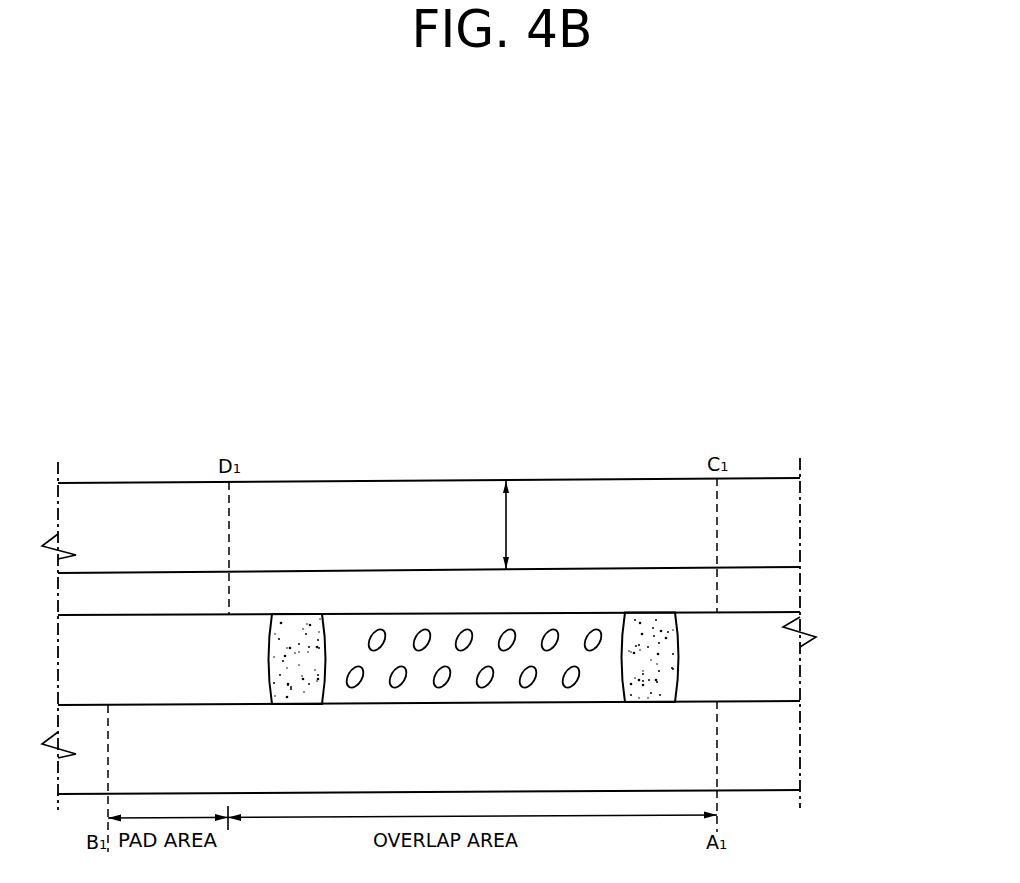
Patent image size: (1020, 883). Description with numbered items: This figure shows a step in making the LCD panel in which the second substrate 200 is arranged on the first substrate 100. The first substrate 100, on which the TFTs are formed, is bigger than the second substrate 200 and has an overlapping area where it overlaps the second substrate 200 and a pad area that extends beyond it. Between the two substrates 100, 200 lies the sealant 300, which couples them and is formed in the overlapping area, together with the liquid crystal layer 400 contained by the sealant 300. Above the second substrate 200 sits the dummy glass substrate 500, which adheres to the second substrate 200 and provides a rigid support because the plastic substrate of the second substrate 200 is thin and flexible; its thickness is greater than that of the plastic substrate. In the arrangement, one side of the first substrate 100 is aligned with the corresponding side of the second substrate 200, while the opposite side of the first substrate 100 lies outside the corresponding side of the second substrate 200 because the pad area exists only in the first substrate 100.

The first substrate 100 is at (800, 745).
The second substrate 200 is at (800, 585).
The sealant 300 is at (663, 637).
The liquid crystal layer 400 is at (600, 682).
The dummy glass substrate 500 is at (800, 515).